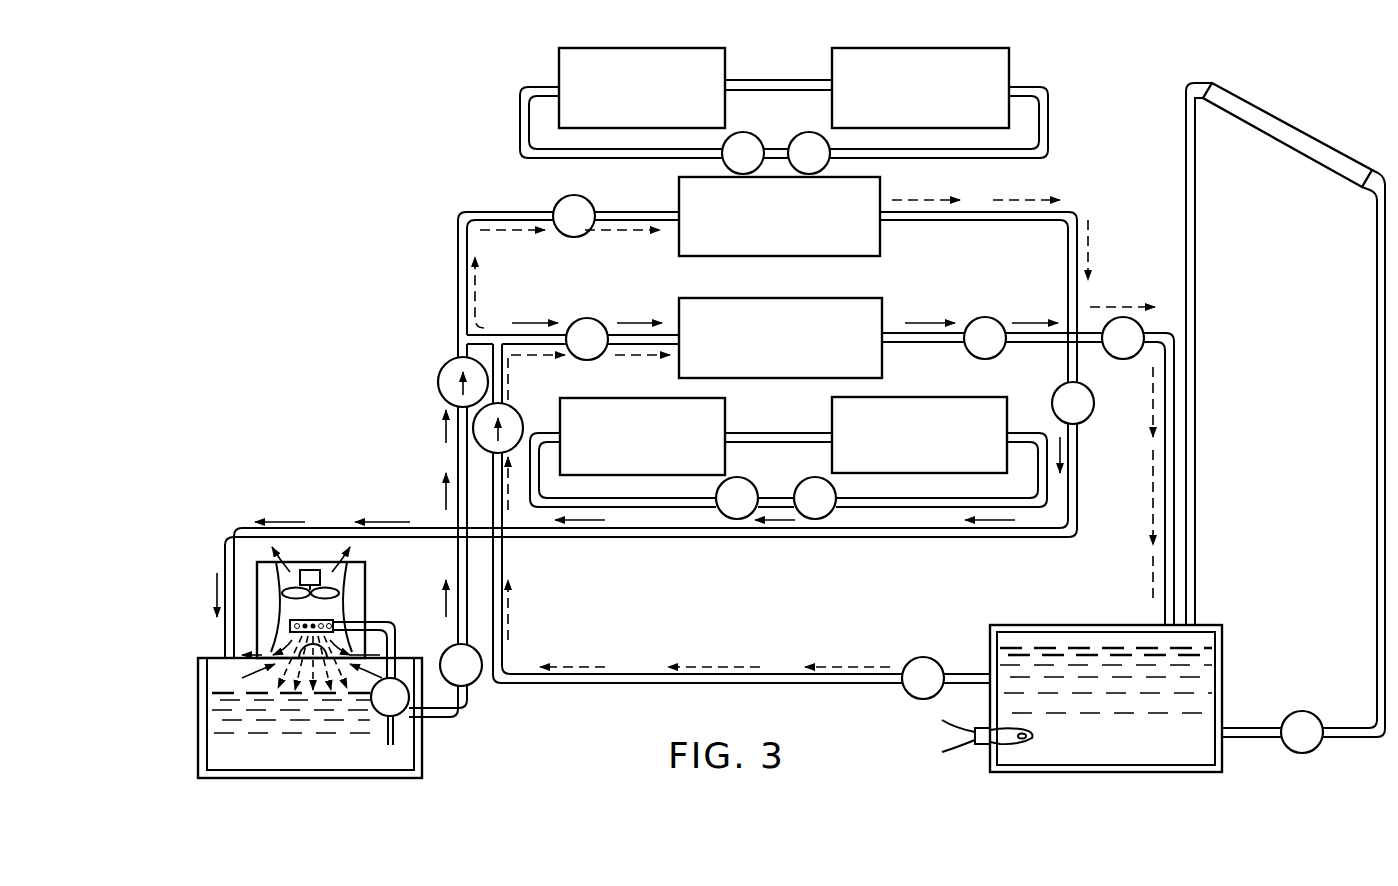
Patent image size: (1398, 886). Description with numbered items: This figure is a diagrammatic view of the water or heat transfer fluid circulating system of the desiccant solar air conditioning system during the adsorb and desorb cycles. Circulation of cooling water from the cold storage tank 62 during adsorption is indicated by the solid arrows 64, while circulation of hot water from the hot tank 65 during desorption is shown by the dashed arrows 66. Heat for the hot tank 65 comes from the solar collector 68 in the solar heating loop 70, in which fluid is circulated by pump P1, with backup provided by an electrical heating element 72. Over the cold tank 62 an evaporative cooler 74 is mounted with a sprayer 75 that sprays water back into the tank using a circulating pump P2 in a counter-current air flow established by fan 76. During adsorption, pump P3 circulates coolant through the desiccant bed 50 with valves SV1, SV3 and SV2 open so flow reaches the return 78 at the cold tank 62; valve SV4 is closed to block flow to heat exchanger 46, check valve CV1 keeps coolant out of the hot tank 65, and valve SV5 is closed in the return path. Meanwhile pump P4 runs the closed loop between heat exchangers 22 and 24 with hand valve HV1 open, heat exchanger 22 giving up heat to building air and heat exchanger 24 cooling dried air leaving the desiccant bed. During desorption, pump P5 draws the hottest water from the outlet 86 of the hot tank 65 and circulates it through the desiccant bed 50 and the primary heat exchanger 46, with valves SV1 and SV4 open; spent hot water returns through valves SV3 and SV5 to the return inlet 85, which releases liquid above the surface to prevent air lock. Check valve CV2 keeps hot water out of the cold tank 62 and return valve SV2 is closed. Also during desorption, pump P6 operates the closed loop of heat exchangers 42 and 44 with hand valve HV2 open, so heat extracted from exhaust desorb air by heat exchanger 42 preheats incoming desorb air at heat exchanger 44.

The heat exchanger 42 is at (558, 60).
The heat exchanger 44 is at (1012, 72).
The heat exchanger 46 is at (882, 240).
The desiccant bed 50 is at (882, 310).
The heat exchanger 24 is at (727, 412).
The heat exchanger 22 is at (982, 397).
The hand valve HV2 is at (741, 131).
The pump P6 is at (830, 160).
The valve SV4 is at (562, 197).
The valve SV1 is at (588, 318).
The valve SV3 is at (988, 317).
The valve SV5 is at (1115, 317).
The return valve SV2 is at (1083, 425).
The check valve CV2 is at (442, 370).
The check valve CV1 is at (511, 410).
The hand valve HV1 is at (745, 478).
The pump P4 is at (832, 512).
The pump P3 is at (478, 683).
The circulating pump P2 is at (405, 712).
The pump P5 is at (905, 697).
The pump P1 is at (1318, 748).
The solid arrows 64 is at (445, 435).
The dashed arrows 66 is at (1152, 495).
The return inlet 85 is at (1163, 588).
The outlet 86 is at (974, 668).
The return 78 is at (223, 562).
The solar collector 68 is at (1310, 158).
The solar heating loop 70 is at (1197, 250).
The hot storage tank 65 is at (1222, 697).
The electrical heating element 72 is at (1030, 736).
The cold storage tank 62 is at (422, 762).
The evaporative cooler 74 is at (367, 593).
The fan 76 is at (317, 570).
The sprayer 75 is at (335, 622).